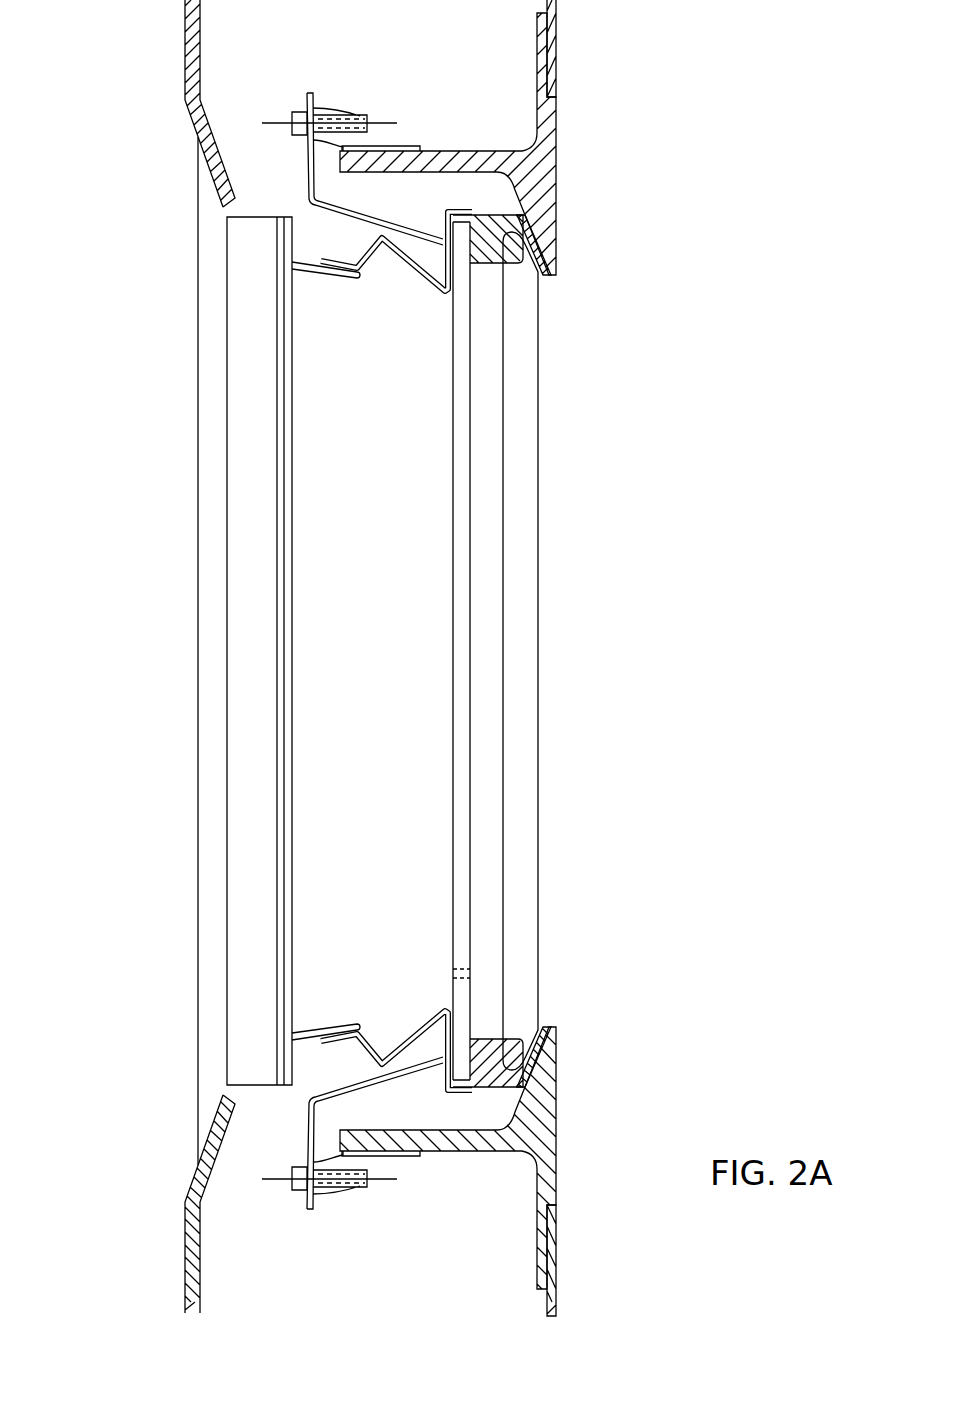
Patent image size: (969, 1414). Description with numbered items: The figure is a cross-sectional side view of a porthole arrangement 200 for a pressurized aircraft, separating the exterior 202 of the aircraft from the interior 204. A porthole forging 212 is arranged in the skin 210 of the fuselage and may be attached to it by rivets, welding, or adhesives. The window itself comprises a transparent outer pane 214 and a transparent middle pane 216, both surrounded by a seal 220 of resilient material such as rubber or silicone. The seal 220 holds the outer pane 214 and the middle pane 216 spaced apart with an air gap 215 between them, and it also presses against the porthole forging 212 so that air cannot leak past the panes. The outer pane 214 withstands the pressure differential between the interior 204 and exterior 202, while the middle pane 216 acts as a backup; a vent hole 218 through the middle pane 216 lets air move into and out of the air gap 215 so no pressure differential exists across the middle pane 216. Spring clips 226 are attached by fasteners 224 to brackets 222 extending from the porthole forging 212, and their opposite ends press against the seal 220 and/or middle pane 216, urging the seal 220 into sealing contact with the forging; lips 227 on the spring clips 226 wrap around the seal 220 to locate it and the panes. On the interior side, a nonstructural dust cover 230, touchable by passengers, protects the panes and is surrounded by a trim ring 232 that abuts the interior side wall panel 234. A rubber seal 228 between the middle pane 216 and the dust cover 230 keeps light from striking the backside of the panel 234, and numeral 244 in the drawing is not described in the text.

The porthole arrangement 200 is at (632, 133).
The exterior 202 is at (781, 266).
The interior 204 is at (104, 337).
The skin 210 is at (557, 30).
The porthole forging 212 is at (557, 187).
The outer pane 214 is at (540, 483).
The air gap 215 is at (485, 773).
The middle pane 216 is at (452, 507).
The vent hole 218 is at (455, 972).
The seal 220 is at (548, 275).
The brackets 222 is at (373, 143).
The fasteners 224 is at (297, 1193).
The spring clips 226 is at (355, 200).
The lips 227 is at (452, 207).
The rubber seal 228 is at (403, 260).
The dust cover 230 is at (293, 900).
The trim ring 232 is at (197, 938).
The interior side wall panel 234 is at (185, 93).
The fastener 244 is at (296, 112).